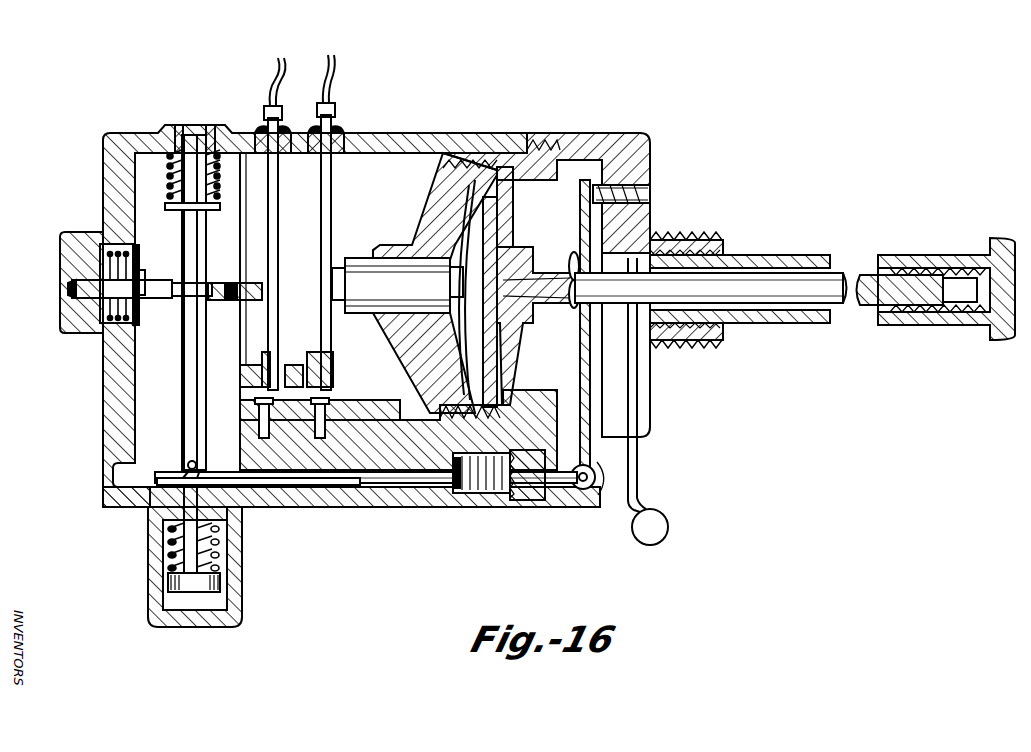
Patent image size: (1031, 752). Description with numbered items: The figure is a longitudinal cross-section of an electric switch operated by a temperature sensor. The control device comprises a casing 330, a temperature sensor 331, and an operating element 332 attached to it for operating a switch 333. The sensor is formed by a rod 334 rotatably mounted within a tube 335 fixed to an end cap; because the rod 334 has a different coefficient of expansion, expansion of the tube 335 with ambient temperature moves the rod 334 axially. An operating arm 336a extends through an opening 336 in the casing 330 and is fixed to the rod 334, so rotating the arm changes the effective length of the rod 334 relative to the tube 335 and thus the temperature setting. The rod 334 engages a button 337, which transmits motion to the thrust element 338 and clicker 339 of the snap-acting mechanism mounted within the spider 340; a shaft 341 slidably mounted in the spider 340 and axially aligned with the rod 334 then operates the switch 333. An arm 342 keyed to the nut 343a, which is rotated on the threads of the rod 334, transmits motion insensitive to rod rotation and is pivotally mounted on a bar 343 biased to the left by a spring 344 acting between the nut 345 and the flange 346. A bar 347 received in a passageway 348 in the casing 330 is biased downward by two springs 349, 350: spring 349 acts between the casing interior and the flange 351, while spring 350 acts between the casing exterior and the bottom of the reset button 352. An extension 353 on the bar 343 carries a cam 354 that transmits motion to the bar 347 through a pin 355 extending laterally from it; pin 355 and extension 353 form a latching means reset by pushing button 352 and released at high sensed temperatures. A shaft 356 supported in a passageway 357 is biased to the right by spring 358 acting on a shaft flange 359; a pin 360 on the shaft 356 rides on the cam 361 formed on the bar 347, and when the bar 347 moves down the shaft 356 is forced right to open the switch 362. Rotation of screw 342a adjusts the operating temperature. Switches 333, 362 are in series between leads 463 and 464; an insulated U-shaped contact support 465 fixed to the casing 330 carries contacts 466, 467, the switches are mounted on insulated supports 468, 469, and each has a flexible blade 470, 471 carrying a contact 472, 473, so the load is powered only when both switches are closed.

The casing 330 is at (452, 133).
The temperature sensor 331 is at (880, 255).
The operating element 332 is at (462, 300).
The switch 333 is at (318, 244).
The rod 334 is at (836, 258).
The tube 335 is at (928, 255).
The opening 336 is at (651, 383).
The operating arm 336a is at (640, 403).
The button 337 is at (520, 330).
The thrust element 338 is at (450, 390).
The clicker 339 is at (468, 330).
The spider 340 is at (448, 180).
The shaft 341 is at (348, 260).
The arm 342 is at (586, 486).
The screw 342a is at (650, 192).
The bar 343 is at (563, 490).
The nut 343a is at (575, 252).
The spring 344 is at (470, 490).
The nut 345 is at (535, 498).
The flange 346 is at (455, 492).
The bar 347 is at (200, 325).
The passageway 348 is at (208, 130).
The spring 349 is at (222, 205).
The spring 350 is at (168, 542).
The flange 351 is at (176, 208).
The reset button 352 is at (170, 595).
The extension 353 is at (180, 477).
The cam 354 is at (185, 470).
The pin 355 is at (195, 462).
The shaft 356 is at (150, 280).
The passageway 357 is at (70, 291).
The spring 358 is at (132, 322).
The shaft flange 359 is at (145, 272).
The pin 360 is at (152, 285).
The cam 361 is at (183, 285).
The switch 362 is at (266, 283).
The lead 463 is at (335, 88).
The lead 464 is at (272, 90).
The insulated U-shaped contact support 465 is at (305, 400).
The contact 466 is at (297, 365).
The contact 467 is at (246, 364).
The insulated support 468 is at (340, 125).
The insulated support 469 is at (258, 125).
The flexible blade 470 is at (320, 190).
The flexible blade 471 is at (278, 302).
The contact 472 is at (328, 360).
The contact 473 is at (260, 365).